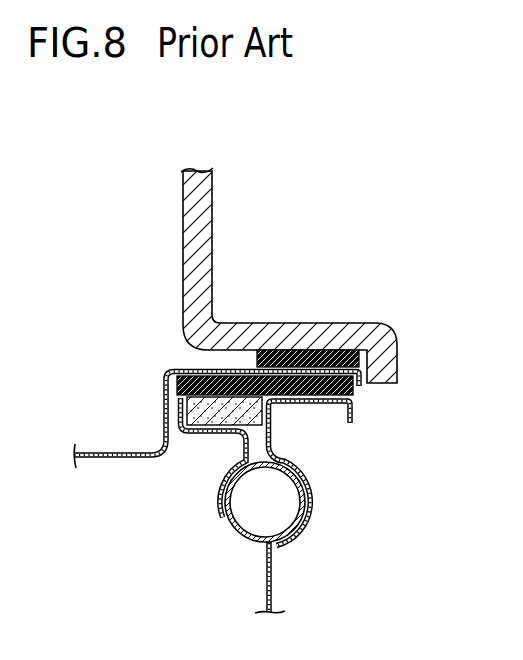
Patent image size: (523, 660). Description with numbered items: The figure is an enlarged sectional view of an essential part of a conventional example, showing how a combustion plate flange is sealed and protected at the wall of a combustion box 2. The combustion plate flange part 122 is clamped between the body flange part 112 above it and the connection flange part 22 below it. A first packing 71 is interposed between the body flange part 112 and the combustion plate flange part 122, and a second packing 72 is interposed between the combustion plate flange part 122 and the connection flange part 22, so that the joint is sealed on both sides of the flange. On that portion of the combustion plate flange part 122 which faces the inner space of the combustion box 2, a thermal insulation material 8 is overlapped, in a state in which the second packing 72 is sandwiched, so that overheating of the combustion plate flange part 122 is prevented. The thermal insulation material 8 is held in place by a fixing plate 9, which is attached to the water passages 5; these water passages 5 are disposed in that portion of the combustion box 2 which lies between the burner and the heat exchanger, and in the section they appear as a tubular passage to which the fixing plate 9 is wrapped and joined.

The body flange part 112 is at (271, 350).
The first packing 71 is at (333, 350).
The second packing 72 is at (238, 367).
The thermal insulation material 8 is at (198, 412).
The fixing plate 9 is at (240, 434).
The connection flange part 22 is at (305, 404).
The combustion plate flange part 122 is at (322, 404).
The water passages 5 is at (242, 537).
The combustion box 2 is at (273, 592).